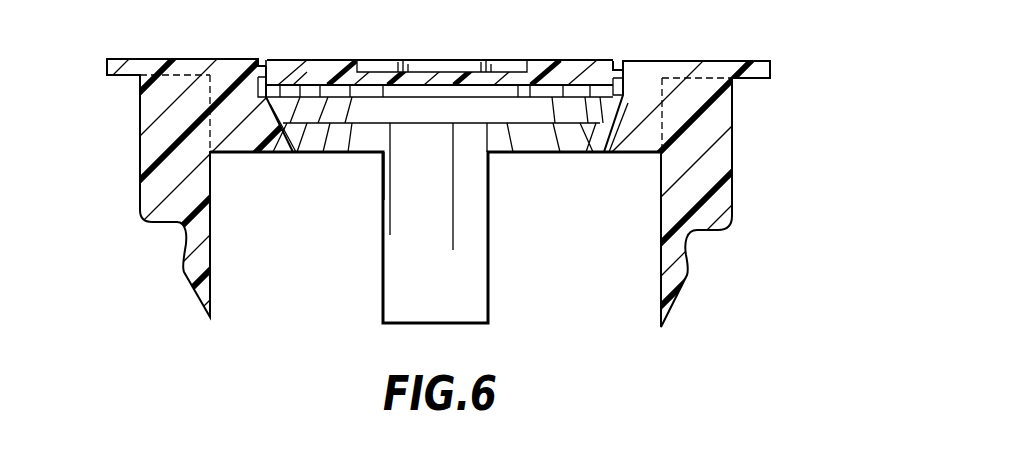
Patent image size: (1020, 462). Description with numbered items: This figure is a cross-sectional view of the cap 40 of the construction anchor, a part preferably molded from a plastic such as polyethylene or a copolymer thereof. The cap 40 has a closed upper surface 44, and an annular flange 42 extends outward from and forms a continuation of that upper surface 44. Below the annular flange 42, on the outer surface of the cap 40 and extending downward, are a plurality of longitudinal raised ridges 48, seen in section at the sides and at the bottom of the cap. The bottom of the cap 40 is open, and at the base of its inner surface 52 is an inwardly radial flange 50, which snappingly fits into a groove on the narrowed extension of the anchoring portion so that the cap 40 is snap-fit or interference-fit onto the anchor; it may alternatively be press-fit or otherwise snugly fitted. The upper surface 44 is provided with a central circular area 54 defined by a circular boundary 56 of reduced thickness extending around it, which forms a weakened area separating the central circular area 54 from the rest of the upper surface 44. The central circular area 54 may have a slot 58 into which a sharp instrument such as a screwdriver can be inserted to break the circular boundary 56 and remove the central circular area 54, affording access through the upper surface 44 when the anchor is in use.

The cap 40 is at (130, 150).
The annular flange 42 is at (107, 66).
The upper surface 44 is at (636, 61).
The longitudinal raised ridges 48 is at (150, 212).
The inwardly radial flange 50 is at (287, 153).
The inner surface 52 is at (519, 92).
The central circular area 54 is at (326, 70).
The circular boundary 56 is at (265, 59).
The slot 58 is at (447, 61).